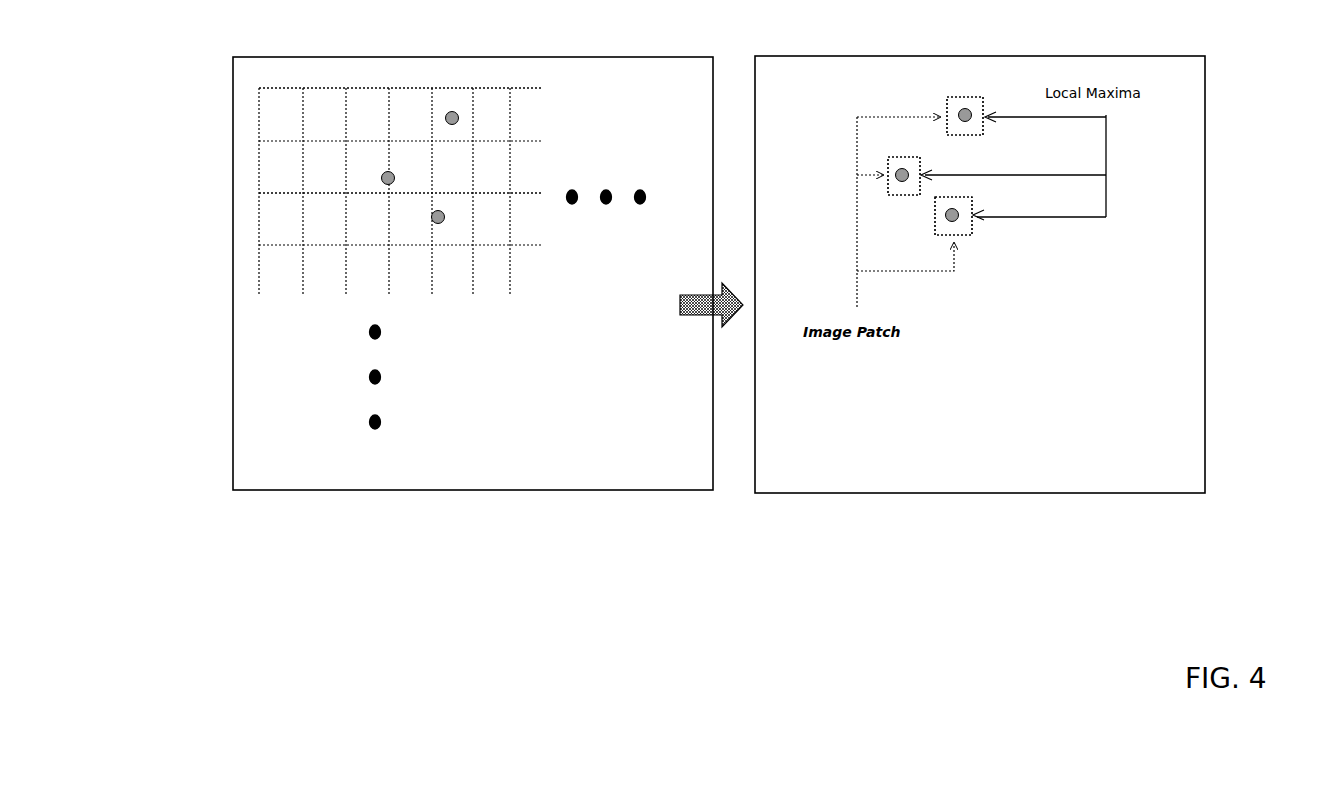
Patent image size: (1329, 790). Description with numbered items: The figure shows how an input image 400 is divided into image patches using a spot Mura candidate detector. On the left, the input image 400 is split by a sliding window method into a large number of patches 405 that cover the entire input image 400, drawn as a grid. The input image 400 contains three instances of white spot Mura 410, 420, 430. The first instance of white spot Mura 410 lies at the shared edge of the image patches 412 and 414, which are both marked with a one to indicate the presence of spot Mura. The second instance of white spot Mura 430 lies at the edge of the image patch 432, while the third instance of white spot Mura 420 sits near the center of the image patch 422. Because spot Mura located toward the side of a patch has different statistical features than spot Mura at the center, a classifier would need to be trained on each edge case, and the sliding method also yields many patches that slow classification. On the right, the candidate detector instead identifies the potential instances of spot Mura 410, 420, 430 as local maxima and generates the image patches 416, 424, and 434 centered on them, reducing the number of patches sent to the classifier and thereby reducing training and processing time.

The input image 400 is at (235, 150).
The image patches 405 is at (240, 278).
The first instance of white spot Mura 410 is at (387, 173).
The image patch 412 is at (355, 190).
The image patch 414 is at (413, 190).
The image patch 416 is at (888, 158).
The third instance of white spot Mura 420 is at (453, 120).
The image patch 422 is at (443, 97).
The image patch 424 is at (952, 98).
The second instance of white spot Mura 430 is at (438, 213).
The image patch 432 is at (457, 242).
The image patch 434 is at (943, 227).